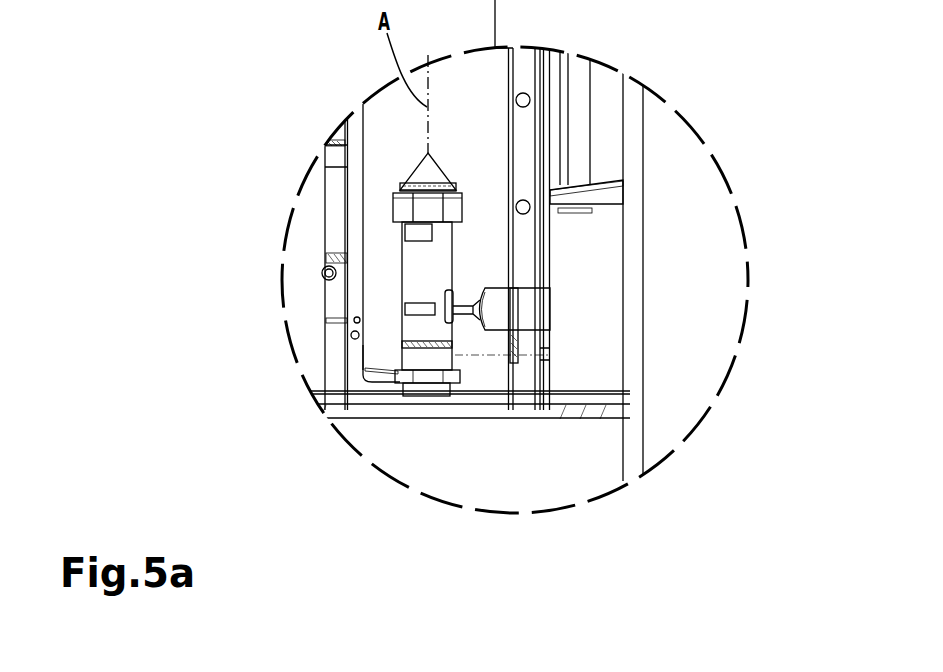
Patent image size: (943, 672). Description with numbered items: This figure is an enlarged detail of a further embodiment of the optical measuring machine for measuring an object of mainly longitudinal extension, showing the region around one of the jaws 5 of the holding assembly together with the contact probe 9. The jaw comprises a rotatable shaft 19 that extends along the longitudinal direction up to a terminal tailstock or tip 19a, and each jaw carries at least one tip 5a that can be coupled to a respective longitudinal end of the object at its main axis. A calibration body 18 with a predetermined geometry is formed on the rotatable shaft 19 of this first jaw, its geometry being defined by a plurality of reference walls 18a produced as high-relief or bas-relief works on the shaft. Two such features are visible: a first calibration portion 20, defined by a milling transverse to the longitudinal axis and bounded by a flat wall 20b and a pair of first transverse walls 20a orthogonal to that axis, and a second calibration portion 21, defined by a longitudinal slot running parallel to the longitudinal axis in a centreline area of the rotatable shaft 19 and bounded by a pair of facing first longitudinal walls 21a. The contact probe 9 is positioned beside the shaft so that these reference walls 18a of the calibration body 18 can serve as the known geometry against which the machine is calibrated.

The jaws 5 is at (435, 374).
The tip 5a is at (488, 112).
The contact probe 9 is at (498, 334).
The calibration body 18 is at (406, 360).
The reference walls 18a is at (453, 292).
The rotatable shaft 19 is at (392, 205).
The terminal tailstock or tip 19a is at (420, 180).
The first calibration portion 20 is at (402, 309).
The first transverse walls 20a is at (405, 302).
The flat wall 20b is at (423, 310).
The second calibration portion 21 is at (440, 333).
The first longitudinal walls 21a is at (450, 297).